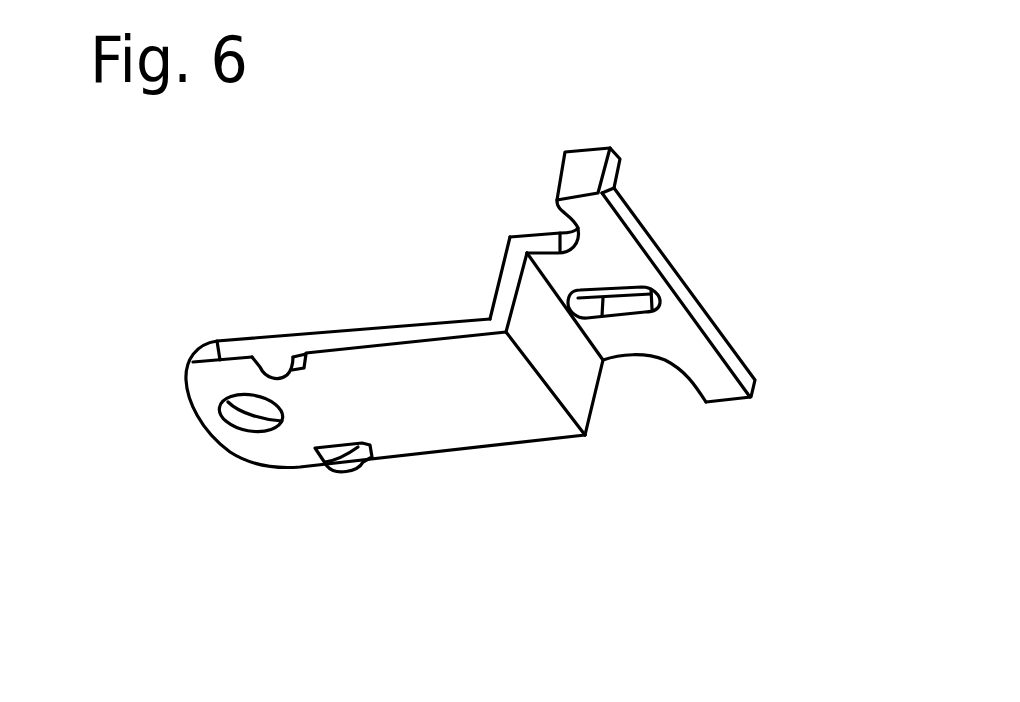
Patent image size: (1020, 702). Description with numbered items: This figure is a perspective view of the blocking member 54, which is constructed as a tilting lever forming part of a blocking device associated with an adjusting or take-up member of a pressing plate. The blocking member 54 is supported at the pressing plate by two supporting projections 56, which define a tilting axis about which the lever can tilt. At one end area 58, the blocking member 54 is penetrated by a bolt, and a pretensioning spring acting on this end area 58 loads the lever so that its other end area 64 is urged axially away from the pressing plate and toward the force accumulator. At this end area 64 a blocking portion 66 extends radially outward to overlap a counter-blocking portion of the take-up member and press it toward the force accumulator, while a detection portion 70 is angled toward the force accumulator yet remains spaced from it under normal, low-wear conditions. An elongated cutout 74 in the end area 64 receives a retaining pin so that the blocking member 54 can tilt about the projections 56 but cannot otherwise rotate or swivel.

The blocking member 54 is at (388, 255).
The supporting projections 56 is at (289, 383).
The end area 58 is at (193, 403).
The end area 64 is at (650, 407).
The blocking portion 66 is at (740, 361).
The detection portion 70 is at (612, 150).
The elongated cutout 74 is at (622, 287).